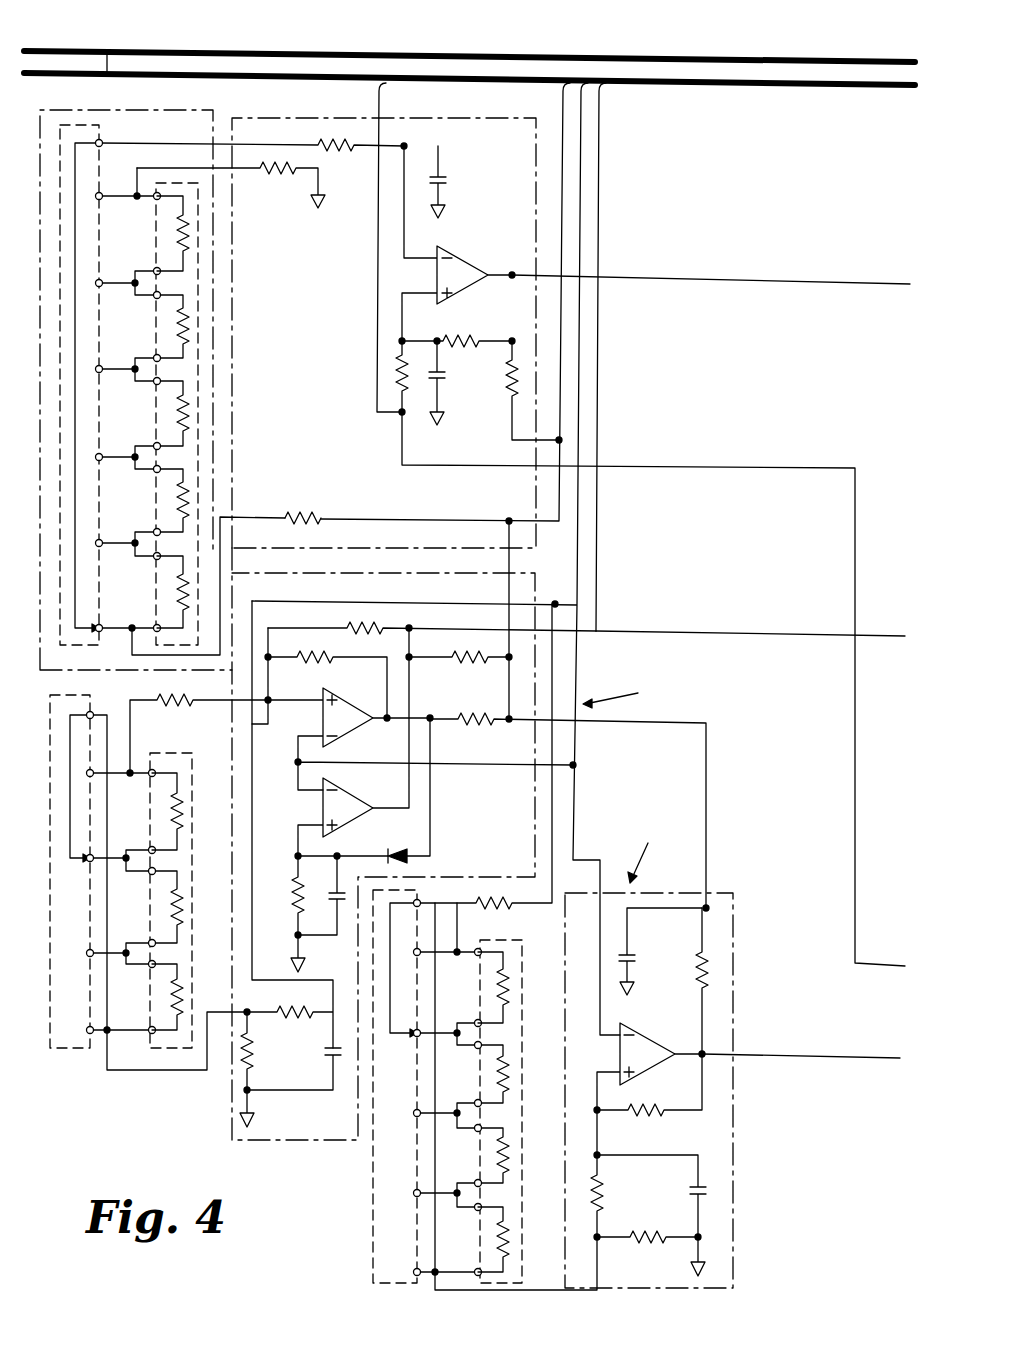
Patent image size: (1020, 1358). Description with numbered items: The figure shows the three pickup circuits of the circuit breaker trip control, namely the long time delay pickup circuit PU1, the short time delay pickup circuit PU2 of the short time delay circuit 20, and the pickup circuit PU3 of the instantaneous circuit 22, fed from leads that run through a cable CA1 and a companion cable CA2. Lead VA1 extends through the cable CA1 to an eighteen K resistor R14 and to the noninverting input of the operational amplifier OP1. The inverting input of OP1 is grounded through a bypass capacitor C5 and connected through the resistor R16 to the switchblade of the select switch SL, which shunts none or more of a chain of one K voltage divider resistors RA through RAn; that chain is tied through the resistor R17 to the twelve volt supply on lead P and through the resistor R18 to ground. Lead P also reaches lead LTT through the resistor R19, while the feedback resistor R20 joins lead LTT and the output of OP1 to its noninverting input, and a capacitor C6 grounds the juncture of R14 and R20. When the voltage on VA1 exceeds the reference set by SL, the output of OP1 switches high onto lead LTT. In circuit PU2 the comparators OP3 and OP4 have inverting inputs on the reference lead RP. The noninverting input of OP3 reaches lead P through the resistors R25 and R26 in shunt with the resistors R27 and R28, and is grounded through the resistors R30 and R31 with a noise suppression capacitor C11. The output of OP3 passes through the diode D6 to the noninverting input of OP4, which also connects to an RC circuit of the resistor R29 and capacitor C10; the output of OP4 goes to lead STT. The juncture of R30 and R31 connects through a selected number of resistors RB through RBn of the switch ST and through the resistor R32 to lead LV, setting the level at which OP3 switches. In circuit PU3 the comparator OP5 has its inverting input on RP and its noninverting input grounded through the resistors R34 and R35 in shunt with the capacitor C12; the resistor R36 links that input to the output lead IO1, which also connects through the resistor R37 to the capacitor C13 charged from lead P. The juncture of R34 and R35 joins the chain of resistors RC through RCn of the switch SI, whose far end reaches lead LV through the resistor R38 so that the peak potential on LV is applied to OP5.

The cable CA1 is at (107, 48).
The second supply bus bar CA2 is at (159, 44).
The lead VA1 is at (380, 101).
The lead P is at (563, 108).
The lead RP is at (581, 128).
The lead LV is at (599, 158).
The resistor R16 is at (320, 145).
The resistor R18 is at (303, 174).
The bypass capacitor C5 is at (446, 177).
The pickup circuit PU1 is at (510, 220).
The operational amplifier OP1 is at (449, 243).
The lead LTT is at (848, 284).
The feedback resistor R20 is at (456, 322).
The resistor R14 is at (396, 379).
The capacitor C6 is at (444, 379).
The resistor R19 is at (510, 398).
The resistor R17 is at (322, 517).
The resistor RA is at (182, 235).
The resistor RAn is at (182, 591).
The select switch SL is at (136, 390).
The resistor R32 is at (155, 696).
The resistor R28 is at (352, 614).
The resistor R26 is at (296, 641).
The resistor R27 is at (452, 643).
The operational amplifier OP3 is at (322, 718).
The resistor R25 is at (454, 705).
The operational amplifier OP4 is at (322, 808).
The pickup circuit PU2 is at (494, 807).
The diode D6 is at (413, 852).
The short time delay circuit 20 is at (626, 696).
The instantaneous circuit 22 is at (646, 851).
The lead STT is at (742, 635).
The resistor RB is at (176, 810).
The resistor RBn is at (176, 1004).
The resistor R29 is at (296, 896).
The capacitor C10 is at (328, 898).
The select switch ST is at (129, 1052).
The resistor R31 is at (279, 994).
The resistor R30 is at (250, 1049).
The capacitor C11 is at (330, 1050).
The resistor R38 is at (479, 887).
The resistor RC is at (502, 986).
The resistor RCn is at (502, 1240).
The select switch SI is at (373, 1237).
The capacitor C13 is at (652, 960).
The resistor R37 is at (700, 979).
The comparator OP5 is at (612, 1050).
The output lead IO1 is at (815, 1057).
The resistor R36 is at (638, 1092).
The pickup circuit PU3 is at (719, 1149).
The resistor R34 is at (613, 1175).
The capacitor C12 is at (691, 1191).
The resistor R35 is at (636, 1218).